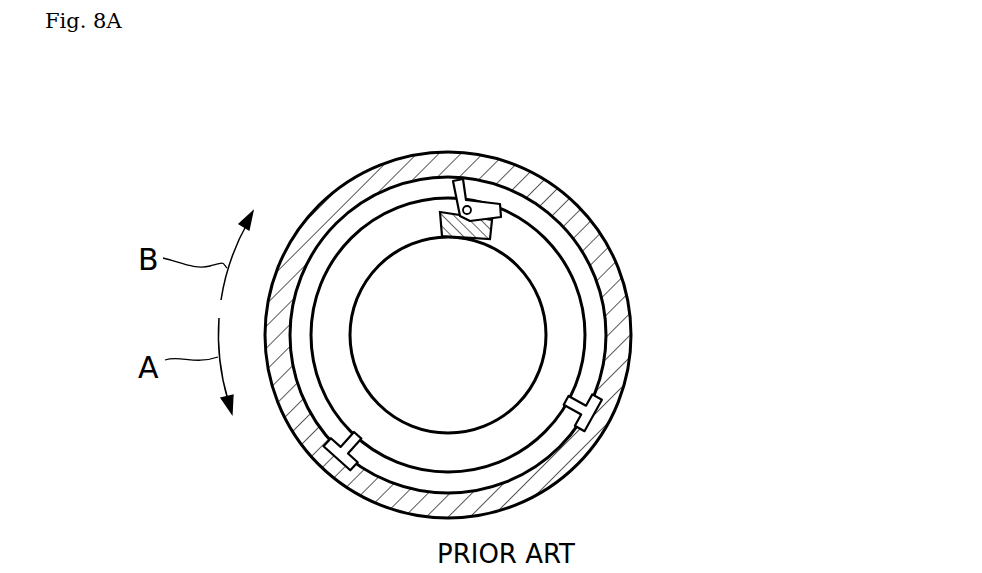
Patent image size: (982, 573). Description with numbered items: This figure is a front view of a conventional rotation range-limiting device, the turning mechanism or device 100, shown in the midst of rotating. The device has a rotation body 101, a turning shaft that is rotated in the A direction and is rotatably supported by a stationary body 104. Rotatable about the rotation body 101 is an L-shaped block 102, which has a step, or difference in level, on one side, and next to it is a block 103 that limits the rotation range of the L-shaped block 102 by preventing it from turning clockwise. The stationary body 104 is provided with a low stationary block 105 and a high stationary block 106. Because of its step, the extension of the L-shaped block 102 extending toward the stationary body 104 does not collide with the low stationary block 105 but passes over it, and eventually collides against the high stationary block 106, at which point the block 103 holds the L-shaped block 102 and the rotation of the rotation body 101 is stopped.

The turning mechanism or device 100 is at (596, 119).
The rotation body 101 is at (585, 360).
The L-shaped block 102 is at (468, 191).
The block 103 is at (440, 214).
The stationary body 104 is at (622, 275).
The low stationary block 105 is at (333, 428).
The high stationary block 106 is at (590, 394).